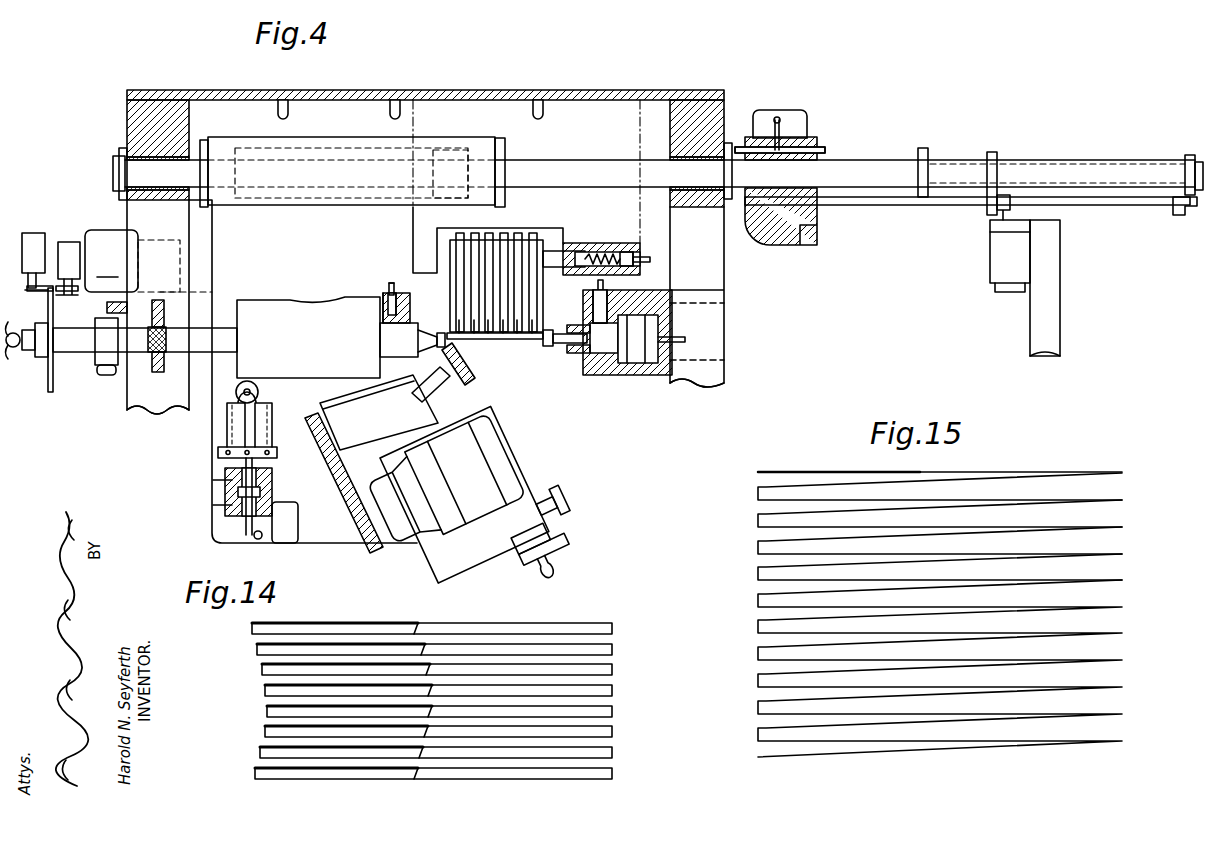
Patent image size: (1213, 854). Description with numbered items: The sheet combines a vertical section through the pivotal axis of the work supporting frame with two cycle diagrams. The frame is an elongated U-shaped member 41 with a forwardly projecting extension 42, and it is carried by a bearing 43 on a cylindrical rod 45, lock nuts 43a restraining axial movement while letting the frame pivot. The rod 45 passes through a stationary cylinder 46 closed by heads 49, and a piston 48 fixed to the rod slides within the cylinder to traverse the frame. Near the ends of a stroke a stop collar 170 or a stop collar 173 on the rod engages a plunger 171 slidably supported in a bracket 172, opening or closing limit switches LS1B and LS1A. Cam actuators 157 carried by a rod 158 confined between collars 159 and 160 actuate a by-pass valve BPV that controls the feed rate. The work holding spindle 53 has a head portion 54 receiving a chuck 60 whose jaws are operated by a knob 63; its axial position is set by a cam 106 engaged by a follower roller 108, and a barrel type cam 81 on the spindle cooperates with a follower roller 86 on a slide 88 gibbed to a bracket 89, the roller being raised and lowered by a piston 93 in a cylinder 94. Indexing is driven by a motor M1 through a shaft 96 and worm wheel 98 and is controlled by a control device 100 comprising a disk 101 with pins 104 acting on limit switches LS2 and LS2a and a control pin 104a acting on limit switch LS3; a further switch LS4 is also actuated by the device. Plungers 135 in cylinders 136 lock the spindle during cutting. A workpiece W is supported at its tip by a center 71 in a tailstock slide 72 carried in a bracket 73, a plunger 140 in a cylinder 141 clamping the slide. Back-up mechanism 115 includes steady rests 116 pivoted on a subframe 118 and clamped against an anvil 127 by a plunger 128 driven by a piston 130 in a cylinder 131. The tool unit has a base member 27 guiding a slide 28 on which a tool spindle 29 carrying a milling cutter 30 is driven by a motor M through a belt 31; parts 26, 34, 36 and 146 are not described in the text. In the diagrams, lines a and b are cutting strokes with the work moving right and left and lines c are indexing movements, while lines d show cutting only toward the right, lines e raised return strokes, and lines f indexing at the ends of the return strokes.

In FIG. 4, the U-shaped frame member 41 is at (298, 92).
In FIG. 4, the forwardly projecting extension 42 is at (172, 412).
In FIG. 4, the cam 106 is at (155, 412).
In FIG. 4, the bracket 73 is at (684, 385).
In FIG. 4, the cylindrical rod 45 is at (113, 174).
In FIG. 4, the lock nuts 43a is at (119, 153).
In FIG. 4, the bearing 43 is at (128, 191).
In FIG. 4, the cylinder 46 is at (330, 137).
In FIG. 4, the cylinder heads 49 is at (205, 206).
In FIG. 4, the piston 48 is at (435, 183).
In FIG. 4, the anvil 127 is at (437, 262).
In FIG. 4, the back-up mechanism 115 is at (548, 236).
In FIG. 4, the workpiece W is at (516, 338).
In FIG. 4, the tailstock center 71 is at (560, 342).
In FIG. 4, the plunger 128 is at (568, 250).
In FIG. 4, the subframe 118 is at (620, 234).
In FIG. 4, the piston 130 is at (634, 258).
In FIG. 4, the cylinder 131 is at (630, 256).
In FIG. 4, the pin 146 is at (650, 262).
In FIG. 4, the cylinders 136 is at (383, 310).
In FIG. 4, the plungers 135 is at (395, 297).
In FIG. 4, the steady rests 116 is at (400, 315).
In FIG. 4, the tailstock slide 72 is at (584, 368).
In FIG. 4, the cylinder 141 is at (612, 300).
In FIG. 4, the plunger 140 is at (592, 312).
In FIG. 4, the barrel type cam 81 is at (292, 299).
In FIG. 4, the spindle head portion 54 is at (402, 324).
In FIG. 4, the chuck 60 is at (430, 348).
In FIG. 4, the driving belt 31 is at (360, 522).
In FIG. 4, the rotary tool spindle 29 is at (433, 382).
In FIG. 4, the milling cutter 30 is at (470, 392).
In FIG. 4, the base member 27 is at (524, 434).
In FIG. 4, the motor assembly 26 is at (550, 465).
In FIG. 4, the motor M is at (455, 518).
In FIG. 4, the slide 28 is at (412, 425).
In FIG. 4, the knob 36 is at (568, 506).
In FIG. 4, the clamp 34 is at (549, 554).
In FIG. 4, the follower roller 86 is at (259, 388).
In FIG. 4, the slide 88 is at (273, 415).
In FIG. 4, the bracket 89 is at (278, 452).
In FIG. 4, the cylinder 94 is at (272, 482).
In FIG. 4, the piston 93 is at (262, 496).
In FIG. 4, the limit switch LS4 is at (264, 538).
In FIG. 4, the control device 100 is at (37, 231).
In FIG. 4, the limit switch LS2 is at (63, 224).
In FIG. 4, the companion limit switch LS2a is at (43, 246).
In FIG. 4, the limit switch LS3 is at (79, 258).
In FIG. 4, the motor M1 is at (110, 232).
In FIG. 4, the shaft 96 is at (205, 290).
In FIG. 4, the worm wheel 98 is at (165, 305).
In FIG. 4, the switch actuating pins 104 is at (42, 293).
In FIG. 4, the control pin 104a is at (58, 294).
In FIG. 4, the disk 101 is at (49, 386).
In FIG. 4, the knob 63 is at (14, 350).
In FIG. 4, the work holding spindle 53 is at (70, 353).
In FIG. 4, the follower roller 108 is at (104, 377).
In FIG. 4, the stop collar 173 is at (730, 146).
In FIG. 4, the bracket 172 is at (795, 240).
In FIG. 4, the plunger 171 is at (822, 148).
In FIG. 4, the limit switch LS1A is at (805, 112).
In FIG. 4, the limit switch LS1B is at (814, 119).
In FIG. 4, the rod 158 is at (1128, 205).
In FIG. 4, the stop collar 170 is at (926, 148).
In FIG. 4, the collar 160 is at (993, 152).
In FIG. 4, the collar 159 is at (1190, 155).
In FIG. 4, the cam actuators 157 is at (997, 206).
In FIG. 4, the by-pass valve BPV is at (990, 265).
In FIG. 14, the cutting stroke lines a is at (312, 622).
In FIG. 14, the cutting stroke lines b is at (252, 626).
In FIG. 14, the indexing movement lines c is at (257, 646).
In FIG. 15, the cutting stroke lines d is at (786, 472).
In FIG. 15, the return stroke lines e is at (760, 485).
In FIG. 15, the indexing lines f is at (758, 492).